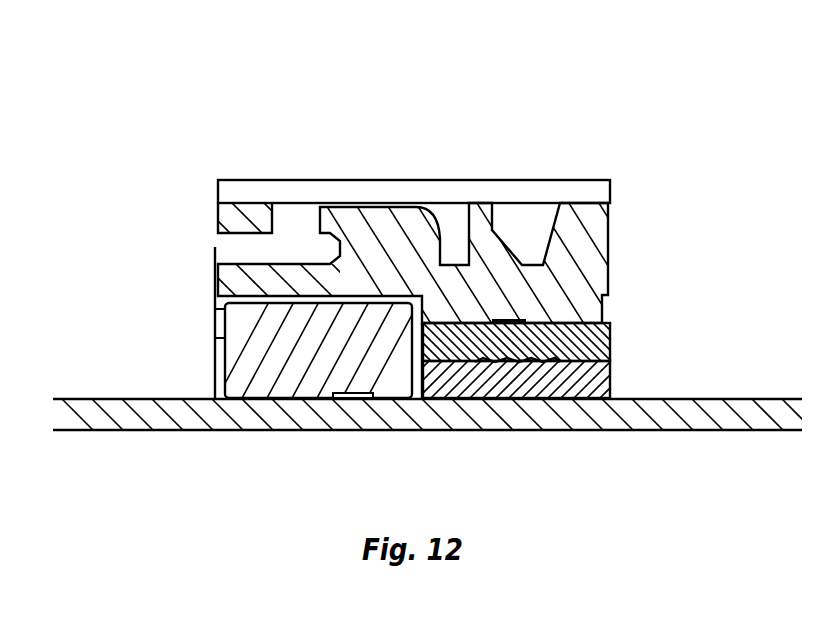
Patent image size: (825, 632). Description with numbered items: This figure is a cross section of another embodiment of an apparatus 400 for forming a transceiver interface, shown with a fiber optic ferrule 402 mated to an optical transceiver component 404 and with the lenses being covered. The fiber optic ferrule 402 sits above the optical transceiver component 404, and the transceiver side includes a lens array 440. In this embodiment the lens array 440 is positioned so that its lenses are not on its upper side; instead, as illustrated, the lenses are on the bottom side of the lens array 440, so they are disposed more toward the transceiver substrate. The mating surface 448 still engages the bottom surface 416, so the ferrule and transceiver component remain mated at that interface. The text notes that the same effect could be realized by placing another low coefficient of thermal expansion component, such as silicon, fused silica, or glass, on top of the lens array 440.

The apparatus 400 is at (433, 226).
The fiber optic ferrule 402 is at (264, 179).
The optical transceiver component 404 is at (187, 302).
The bottom surface 416 is at (577, 360).
The lens array 440 is at (610, 344).
The mating surface 448 is at (608, 322).